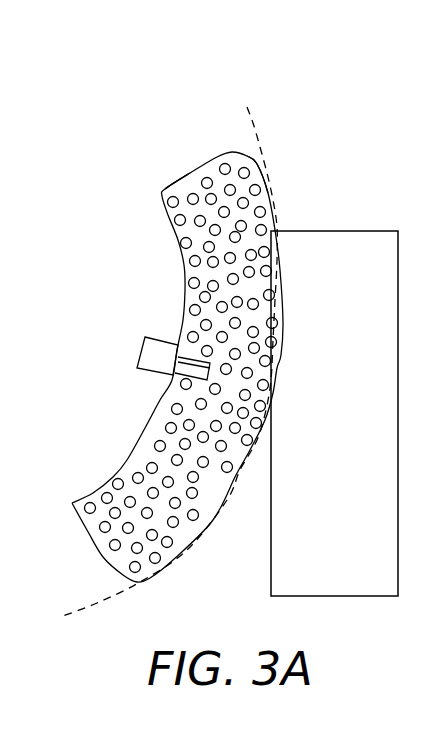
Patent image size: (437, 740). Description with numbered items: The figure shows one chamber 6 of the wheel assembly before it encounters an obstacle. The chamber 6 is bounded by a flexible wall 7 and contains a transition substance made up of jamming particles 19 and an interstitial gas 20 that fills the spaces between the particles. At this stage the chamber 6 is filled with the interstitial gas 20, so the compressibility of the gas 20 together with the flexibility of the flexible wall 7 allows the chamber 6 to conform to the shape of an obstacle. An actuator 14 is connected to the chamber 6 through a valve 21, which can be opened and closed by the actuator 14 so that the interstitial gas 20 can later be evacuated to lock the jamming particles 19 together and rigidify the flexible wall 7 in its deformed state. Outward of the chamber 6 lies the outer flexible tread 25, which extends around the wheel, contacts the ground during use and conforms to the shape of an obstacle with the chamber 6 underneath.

The chamber 6 is at (213, 167).
The flexible wall 7 is at (158, 202).
The jamming particles 19 is at (183, 243).
The interstitial gas 20 is at (238, 163).
The outer flexible tread 25 is at (247, 107).
The actuator 14 is at (133, 350).
The valve 21 is at (147, 376).